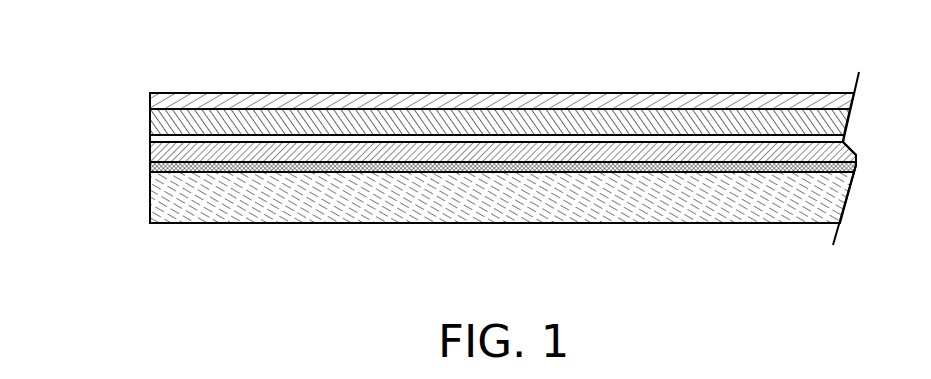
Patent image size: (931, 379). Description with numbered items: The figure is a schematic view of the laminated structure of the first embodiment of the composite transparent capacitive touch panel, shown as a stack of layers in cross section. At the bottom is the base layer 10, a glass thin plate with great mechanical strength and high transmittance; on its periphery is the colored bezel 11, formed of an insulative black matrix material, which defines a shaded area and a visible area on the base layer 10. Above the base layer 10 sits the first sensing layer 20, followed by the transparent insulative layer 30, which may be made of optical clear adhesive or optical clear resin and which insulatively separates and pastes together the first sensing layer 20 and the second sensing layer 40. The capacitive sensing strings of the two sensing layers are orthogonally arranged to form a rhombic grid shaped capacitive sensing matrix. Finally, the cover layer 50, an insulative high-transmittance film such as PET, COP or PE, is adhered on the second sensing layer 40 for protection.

The base layer 10 is at (168, 207).
The colored bezel 11 is at (150, 168).
The first sensing layer 20 is at (153, 153).
The insulative layer 30 is at (155, 137).
The second sensing layer 40 is at (155, 118).
The cover layer 50 is at (155, 103).